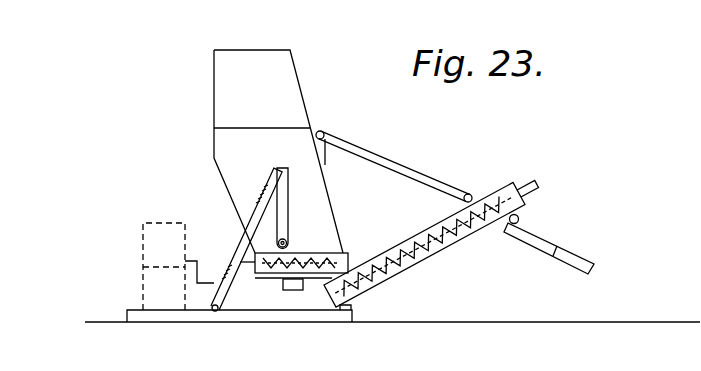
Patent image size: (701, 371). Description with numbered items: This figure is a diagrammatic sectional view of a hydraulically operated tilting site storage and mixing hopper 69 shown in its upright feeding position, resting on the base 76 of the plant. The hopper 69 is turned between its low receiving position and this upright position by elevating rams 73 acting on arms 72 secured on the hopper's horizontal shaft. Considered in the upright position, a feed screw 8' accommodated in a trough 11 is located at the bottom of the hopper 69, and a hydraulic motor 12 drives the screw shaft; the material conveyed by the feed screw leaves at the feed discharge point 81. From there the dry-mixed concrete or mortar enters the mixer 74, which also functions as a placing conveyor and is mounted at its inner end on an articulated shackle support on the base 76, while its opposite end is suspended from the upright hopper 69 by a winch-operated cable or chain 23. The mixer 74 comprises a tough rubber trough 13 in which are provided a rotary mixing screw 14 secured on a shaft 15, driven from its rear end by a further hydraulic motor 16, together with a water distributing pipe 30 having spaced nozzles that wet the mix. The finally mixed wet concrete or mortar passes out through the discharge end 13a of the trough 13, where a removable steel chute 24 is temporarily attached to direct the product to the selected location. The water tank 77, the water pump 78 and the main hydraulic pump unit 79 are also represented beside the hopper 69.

The tilting site storage and mixing hopper 69 is at (283, 87).
The winch-operated cable or chain 23 is at (377, 151).
The hydraulic motor 16 is at (528, 180).
The discharge end of the trough 13a is at (520, 213).
The trough 13 is at (472, 243).
The removable steel chute 24 is at (547, 248).
The mixer 74 is at (432, 250).
The water distributing pipe 30 is at (390, 275).
The mixing screw 14 is at (403, 250).
The shaft 15 is at (390, 253).
The arm 72 is at (289, 211).
The elevating ram 73 is at (262, 203).
The feed screw 8' is at (305, 243).
The trough 11 is at (262, 277).
The water tank 77 is at (160, 222).
The main hydraulic pump unit 79 is at (143, 284).
The base 76 is at (165, 317).
The hydraulic motor 12 is at (247, 268).
The water pump 78 is at (293, 291).
The feed discharge point 81 is at (332, 292).